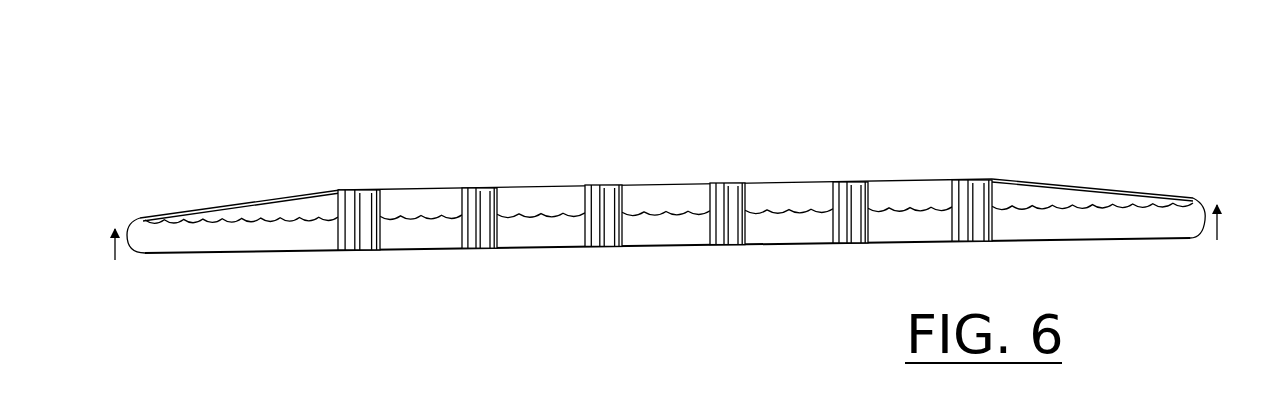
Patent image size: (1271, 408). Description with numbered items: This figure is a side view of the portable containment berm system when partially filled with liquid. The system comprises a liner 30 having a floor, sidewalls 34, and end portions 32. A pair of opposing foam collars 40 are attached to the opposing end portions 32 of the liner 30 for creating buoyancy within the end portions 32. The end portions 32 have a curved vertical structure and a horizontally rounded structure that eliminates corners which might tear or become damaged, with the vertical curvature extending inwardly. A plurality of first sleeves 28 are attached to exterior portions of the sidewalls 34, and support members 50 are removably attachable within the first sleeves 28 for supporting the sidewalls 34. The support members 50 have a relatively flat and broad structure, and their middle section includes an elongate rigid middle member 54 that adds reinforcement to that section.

The first sleeve 28 is at (358, 193).
The liner 30 is at (236, 258).
The end portion 32 is at (133, 225).
The sidewall 34 is at (550, 198).
The foam collar 40 is at (297, 195).
The support member 50 is at (961, 178).
The middle member 54 is at (848, 183).